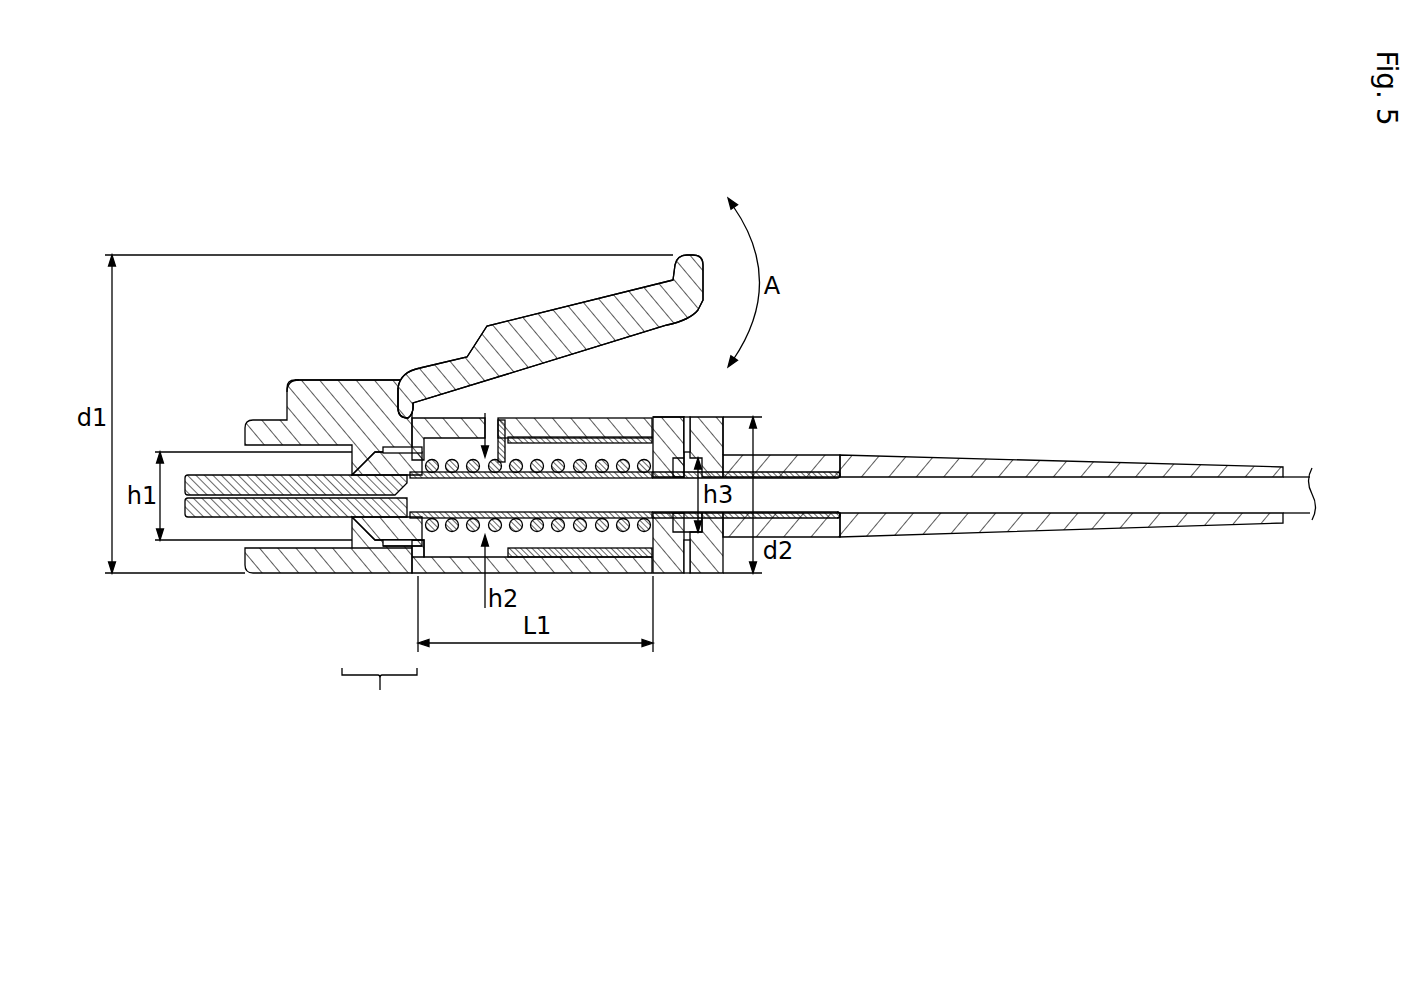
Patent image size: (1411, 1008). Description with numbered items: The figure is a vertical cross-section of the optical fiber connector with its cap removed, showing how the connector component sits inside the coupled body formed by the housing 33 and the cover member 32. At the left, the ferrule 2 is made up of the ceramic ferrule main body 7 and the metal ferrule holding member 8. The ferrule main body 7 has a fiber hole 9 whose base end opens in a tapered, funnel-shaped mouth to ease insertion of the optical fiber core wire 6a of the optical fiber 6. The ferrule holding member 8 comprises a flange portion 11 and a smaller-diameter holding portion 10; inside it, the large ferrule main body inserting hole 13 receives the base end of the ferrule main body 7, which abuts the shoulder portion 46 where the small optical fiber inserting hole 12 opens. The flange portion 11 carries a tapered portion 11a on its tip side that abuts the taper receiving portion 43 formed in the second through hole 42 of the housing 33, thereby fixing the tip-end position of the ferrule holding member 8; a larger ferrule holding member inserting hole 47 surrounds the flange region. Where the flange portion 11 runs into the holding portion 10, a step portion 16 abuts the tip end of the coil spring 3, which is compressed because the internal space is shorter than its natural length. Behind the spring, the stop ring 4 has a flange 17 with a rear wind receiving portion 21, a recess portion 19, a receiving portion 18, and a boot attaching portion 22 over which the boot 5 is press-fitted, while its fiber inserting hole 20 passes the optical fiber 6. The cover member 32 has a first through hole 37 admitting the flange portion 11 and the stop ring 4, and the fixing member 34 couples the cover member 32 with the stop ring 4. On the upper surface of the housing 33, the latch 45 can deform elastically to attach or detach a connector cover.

The ferrule 2 is at (183, 524).
The coil spring 3 is at (630, 428).
The stop ring 4 is at (836, 462).
The boot 5 is at (913, 465).
The optical fiber 6 is at (548, 492).
The optical fiber core wire 6a is at (280, 500).
The ferrule main body 7 is at (227, 472).
The ferrule holding member 8 is at (379, 694).
The fiber hole 9 is at (240, 500).
The holding portion 10 is at (420, 573).
The flange portion 11 is at (395, 573).
The tapered portion 11a is at (345, 573).
The optical fiber inserting hole 12 is at (600, 573).
The ferrule main body inserting hole 13 is at (366, 470).
The step portion 16 is at (432, 458).
The flange 17 is at (667, 418).
The receiving portion 18 is at (728, 424).
The recess portion 19 is at (695, 538).
The fiber inserting hole 20 is at (841, 518).
The wind receiving portion 21 is at (680, 540).
The boot attaching portion 22 is at (807, 520).
The cover member 32 is at (730, 586).
The housing 33 is at (281, 373).
The fixing member 34 is at (686, 418).
The first through hole 37 is at (718, 420).
The second through hole 42 is at (505, 445).
The taper receiving portion 43 is at (326, 392).
The latch 45 is at (545, 332).
The shoulder portion 46 is at (396, 470).
The ferrule holding member inserting hole 47 is at (370, 573).